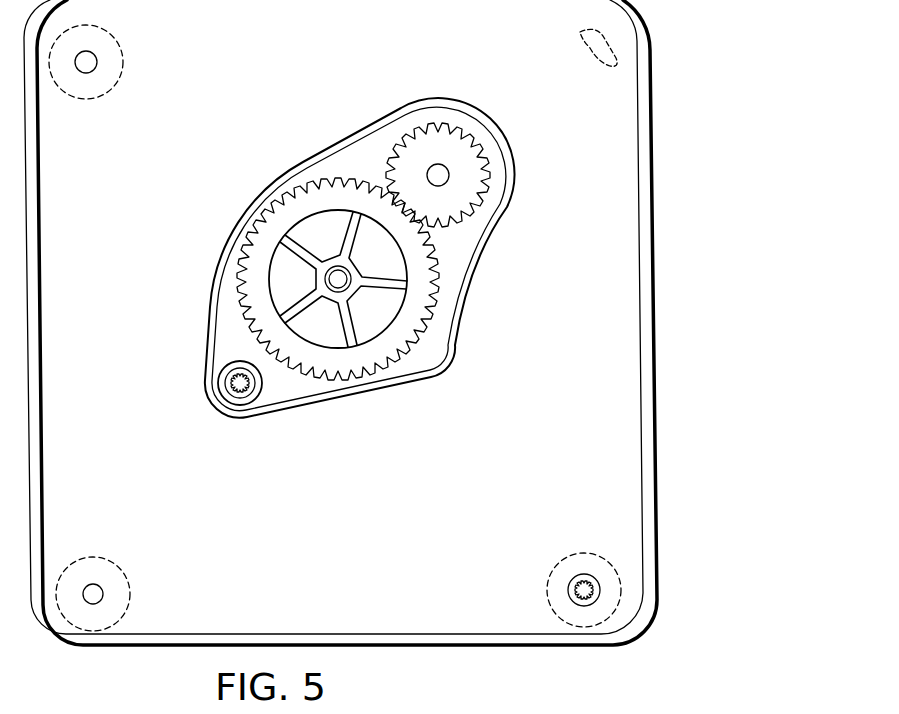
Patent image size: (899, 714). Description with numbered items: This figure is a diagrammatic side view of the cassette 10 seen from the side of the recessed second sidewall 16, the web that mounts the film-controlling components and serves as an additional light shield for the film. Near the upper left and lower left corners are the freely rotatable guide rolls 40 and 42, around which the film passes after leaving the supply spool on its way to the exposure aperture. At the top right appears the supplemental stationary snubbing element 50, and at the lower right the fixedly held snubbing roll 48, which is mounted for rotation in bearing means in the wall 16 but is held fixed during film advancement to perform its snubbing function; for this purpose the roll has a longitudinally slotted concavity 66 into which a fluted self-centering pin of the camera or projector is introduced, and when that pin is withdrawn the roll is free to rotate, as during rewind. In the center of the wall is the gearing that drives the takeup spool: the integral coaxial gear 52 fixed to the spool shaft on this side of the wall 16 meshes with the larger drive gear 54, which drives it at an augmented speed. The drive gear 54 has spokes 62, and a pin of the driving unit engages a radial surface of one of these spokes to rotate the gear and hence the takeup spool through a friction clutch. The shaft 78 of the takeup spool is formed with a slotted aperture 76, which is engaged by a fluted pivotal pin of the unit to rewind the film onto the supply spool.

The cassette 10 is at (668, 257).
The second sidewall 16 is at (390, 487).
The guide roll 40 is at (112, 36).
The guide roll 42 is at (117, 566).
The snubbing roll 48 is at (610, 563).
The supplemental stationary snubbing element 50 is at (595, 30).
The integral coaxial gear 52 is at (474, 142).
The drive gear 54 is at (436, 318).
The spokes 62 is at (352, 330).
The longitudinally slotted concavity 66 is at (569, 592).
The slotted aperture 76 is at (238, 397).
The shaft 78 is at (232, 383).